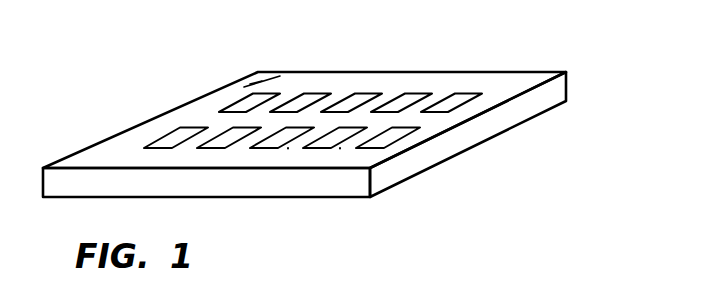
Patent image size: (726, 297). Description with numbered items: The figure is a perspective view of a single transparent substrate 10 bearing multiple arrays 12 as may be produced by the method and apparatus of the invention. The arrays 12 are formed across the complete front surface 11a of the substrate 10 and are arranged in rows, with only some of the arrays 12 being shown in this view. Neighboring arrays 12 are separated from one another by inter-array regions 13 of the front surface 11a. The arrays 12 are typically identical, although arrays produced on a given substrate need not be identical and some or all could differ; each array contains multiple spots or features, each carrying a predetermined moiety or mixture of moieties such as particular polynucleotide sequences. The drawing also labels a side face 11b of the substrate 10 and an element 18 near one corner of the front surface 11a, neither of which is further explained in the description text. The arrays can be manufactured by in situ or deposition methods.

The transparent substrate 10 is at (440, 162).
The front surface 11a is at (528, 75).
The side surface of substrate 11b is at (523, 123).
The arrays 12 is at (178, 133).
The inter-array regions 13 is at (340, 148).
The conductor line 18 is at (262, 77).